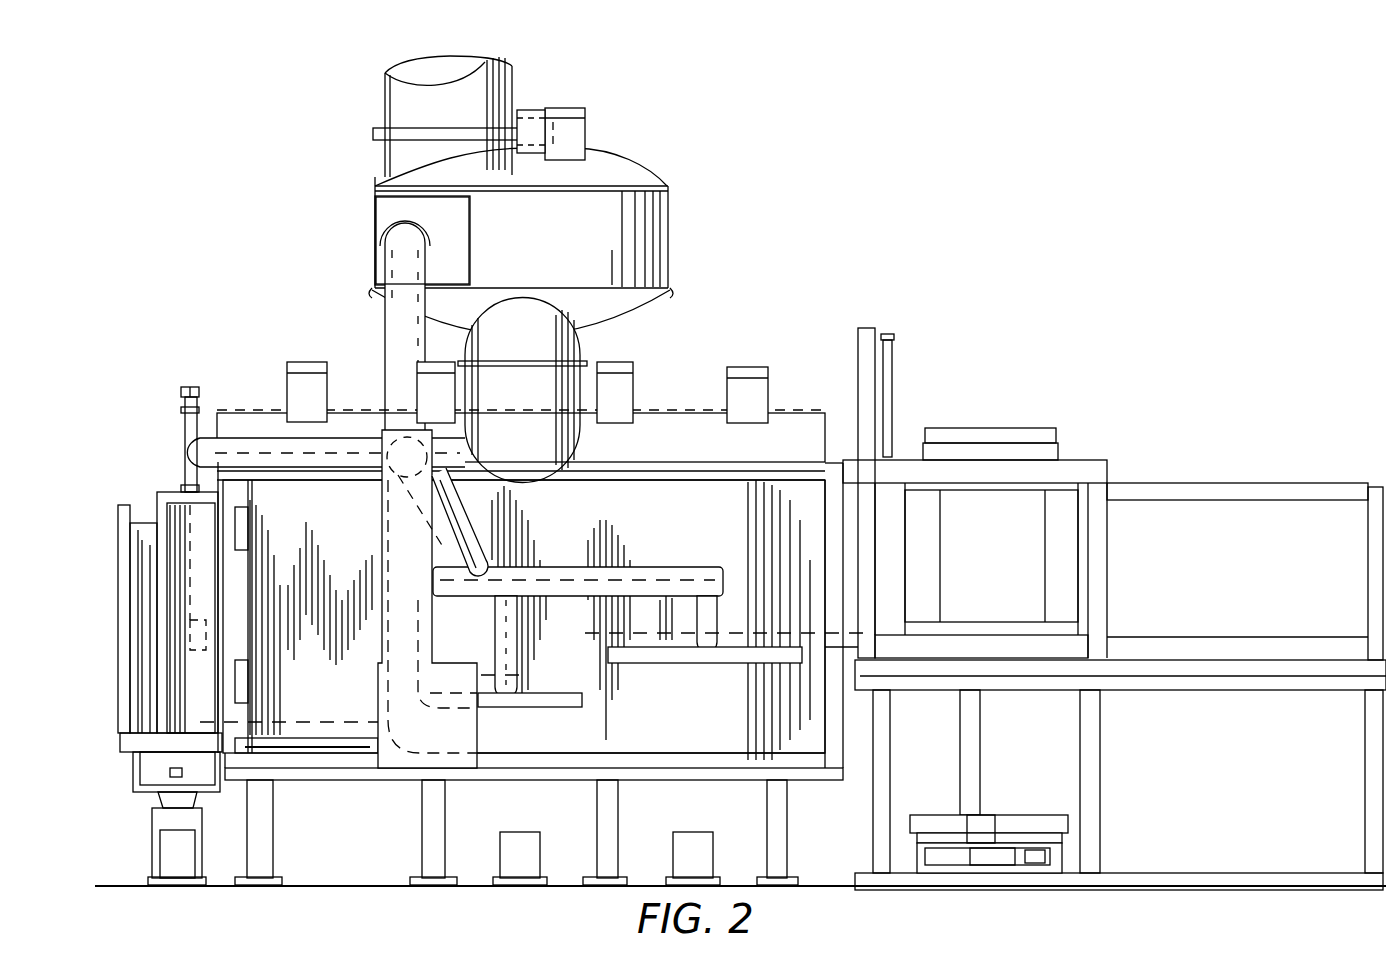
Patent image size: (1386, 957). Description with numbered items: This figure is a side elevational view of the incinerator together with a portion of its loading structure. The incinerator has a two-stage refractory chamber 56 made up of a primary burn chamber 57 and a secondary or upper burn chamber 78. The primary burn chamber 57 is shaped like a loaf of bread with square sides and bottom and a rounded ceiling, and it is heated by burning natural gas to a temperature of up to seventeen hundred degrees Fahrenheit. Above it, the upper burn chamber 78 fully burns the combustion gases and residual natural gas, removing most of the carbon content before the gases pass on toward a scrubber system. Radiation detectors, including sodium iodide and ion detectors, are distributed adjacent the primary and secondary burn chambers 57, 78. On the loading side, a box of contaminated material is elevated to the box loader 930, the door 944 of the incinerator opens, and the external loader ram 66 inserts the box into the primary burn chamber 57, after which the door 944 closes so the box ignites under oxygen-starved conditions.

The two-stage refractory chamber 56 is at (620, 173).
The secondary burn chamber 78 is at (546, 241).
The primary burn chamber 57 is at (690, 520).
The door 944 is at (892, 498).
The box loader 930 is at (1012, 564).
The external loader ram 66 is at (1208, 640).